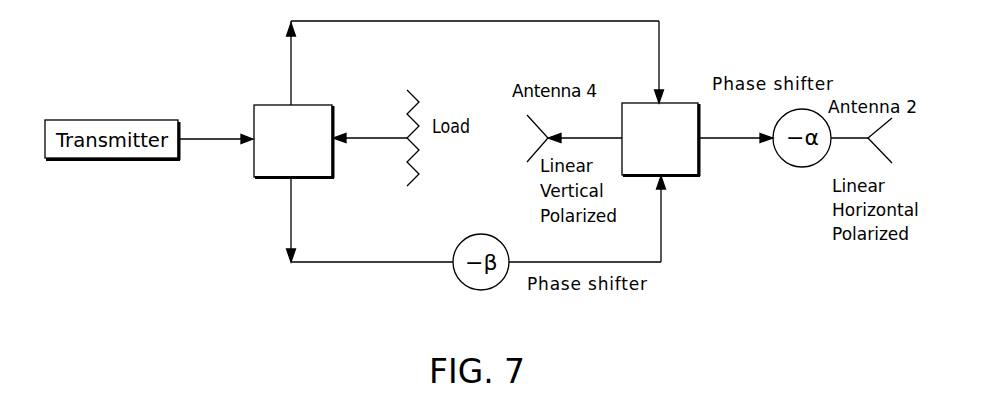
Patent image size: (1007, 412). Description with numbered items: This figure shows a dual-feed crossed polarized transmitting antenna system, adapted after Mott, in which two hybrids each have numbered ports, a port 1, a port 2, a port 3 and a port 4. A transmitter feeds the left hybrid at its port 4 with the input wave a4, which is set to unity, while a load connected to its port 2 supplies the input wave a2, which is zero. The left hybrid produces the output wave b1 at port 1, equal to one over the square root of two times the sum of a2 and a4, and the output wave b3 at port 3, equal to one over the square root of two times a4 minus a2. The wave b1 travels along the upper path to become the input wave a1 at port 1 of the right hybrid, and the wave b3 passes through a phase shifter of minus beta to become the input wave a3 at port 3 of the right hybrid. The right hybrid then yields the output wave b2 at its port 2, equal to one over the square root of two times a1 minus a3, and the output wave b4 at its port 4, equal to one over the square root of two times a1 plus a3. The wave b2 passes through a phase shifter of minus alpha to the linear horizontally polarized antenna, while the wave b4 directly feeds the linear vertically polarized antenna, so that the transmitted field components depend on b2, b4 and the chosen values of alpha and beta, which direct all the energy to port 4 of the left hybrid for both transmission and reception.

The port 1 is at (482, 116).
The port 2 is at (505, 142).
The port 3 is at (477, 165).
The port 4 is at (452, 142).
The input wave a1 is at (675, 62).
The input wave a2 is at (376, 138).
The input wave a3 is at (605, 219).
The input wave a4 is at (216, 127).
The output wave b1 is at (456, 63).
The output wave b2 is at (736, 124).
The output wave b3 is at (355, 220).
The output wave b4 is at (574, 136).